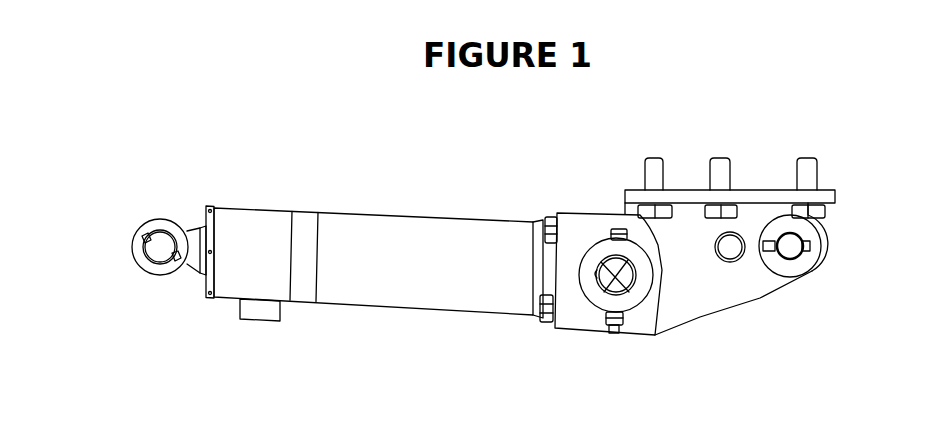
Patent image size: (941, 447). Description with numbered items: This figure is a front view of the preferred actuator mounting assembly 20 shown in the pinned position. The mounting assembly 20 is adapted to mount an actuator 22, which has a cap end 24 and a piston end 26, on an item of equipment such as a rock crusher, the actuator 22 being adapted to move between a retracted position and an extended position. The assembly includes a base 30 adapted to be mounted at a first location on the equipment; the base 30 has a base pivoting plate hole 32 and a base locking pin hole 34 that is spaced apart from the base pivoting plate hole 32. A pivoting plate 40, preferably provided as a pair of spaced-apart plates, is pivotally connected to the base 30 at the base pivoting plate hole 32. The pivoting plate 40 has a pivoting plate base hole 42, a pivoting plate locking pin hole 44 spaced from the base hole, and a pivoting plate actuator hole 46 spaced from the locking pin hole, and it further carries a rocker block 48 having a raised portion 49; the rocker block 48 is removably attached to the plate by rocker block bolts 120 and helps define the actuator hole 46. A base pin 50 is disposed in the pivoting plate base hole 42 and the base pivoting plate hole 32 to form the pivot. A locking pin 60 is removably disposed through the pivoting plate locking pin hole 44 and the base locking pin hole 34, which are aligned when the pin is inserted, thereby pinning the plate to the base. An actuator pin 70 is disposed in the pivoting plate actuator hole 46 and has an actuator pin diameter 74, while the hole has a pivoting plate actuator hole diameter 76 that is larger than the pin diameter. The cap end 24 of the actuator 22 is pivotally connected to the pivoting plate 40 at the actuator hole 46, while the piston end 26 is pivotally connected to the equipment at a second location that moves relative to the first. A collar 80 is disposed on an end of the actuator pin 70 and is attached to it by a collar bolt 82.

The mounting assembly 20 is at (410, 203).
The actuator 22 is at (420, 312).
The cap end 24 is at (594, 319).
The piston end 26 is at (152, 220).
The base 30 is at (760, 190).
The base pivoting plate hole 32 is at (797, 260).
The base locking pin hole 34 is at (733, 257).
The pivoting plate 40 is at (703, 305).
The pivoting plate base hole 42 is at (800, 243).
The pivoting plate locking pin hole 44 is at (710, 218).
The pivoting plate actuator hole 46 is at (603, 262).
The rocker block 48 is at (560, 222).
The raised portion 49 is at (598, 272).
The base pin 50 is at (792, 236).
The locking pin 60 is at (735, 222).
The actuator pin 70 is at (625, 292).
The actuator pin diameter 74 is at (612, 228).
The pivoting plate actuator hole diameter 76 is at (627, 334).
The collar 80 is at (652, 285).
The collar bolt 82 is at (612, 334).
The rocker block bolts 120 is at (537, 222).